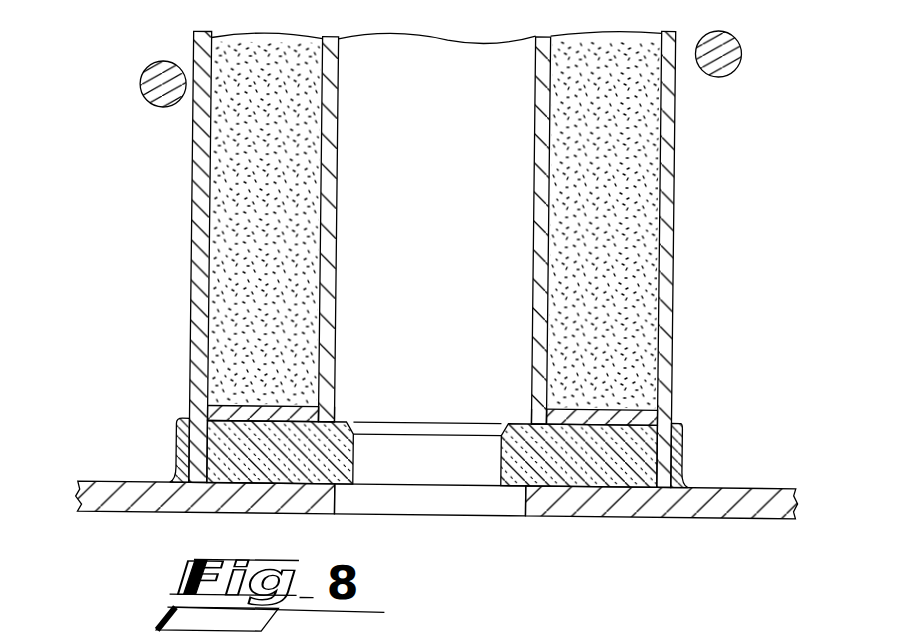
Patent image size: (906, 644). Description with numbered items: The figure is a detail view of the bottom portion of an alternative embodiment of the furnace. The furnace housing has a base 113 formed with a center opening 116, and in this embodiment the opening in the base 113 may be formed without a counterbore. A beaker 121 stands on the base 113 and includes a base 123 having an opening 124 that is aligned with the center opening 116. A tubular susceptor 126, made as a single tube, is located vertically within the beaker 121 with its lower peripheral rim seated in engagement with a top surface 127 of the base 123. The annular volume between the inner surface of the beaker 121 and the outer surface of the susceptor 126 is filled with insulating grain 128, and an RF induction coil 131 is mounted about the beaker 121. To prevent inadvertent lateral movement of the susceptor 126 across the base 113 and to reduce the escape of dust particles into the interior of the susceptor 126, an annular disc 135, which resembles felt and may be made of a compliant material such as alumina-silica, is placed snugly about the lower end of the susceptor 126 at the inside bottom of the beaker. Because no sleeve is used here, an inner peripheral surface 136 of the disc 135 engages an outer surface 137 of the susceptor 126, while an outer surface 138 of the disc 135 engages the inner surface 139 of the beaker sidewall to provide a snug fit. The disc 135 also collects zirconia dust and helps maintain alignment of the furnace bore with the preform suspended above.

The base 113 is at (435, 527).
The center opening 116 is at (434, 527).
The beaker 121 is at (698, 259).
The base of the beaker 123 is at (482, 449).
The opening 124 is at (427, 505).
The tubular susceptor 126 is at (434, 229).
The top surface 127 is at (508, 393).
The insulating grain 128 is at (644, 225).
The RF induction coil 131 is at (444, 76).
The annular disc 135 is at (210, 405).
The inner peripheral surface 136 is at (361, 392).
The outer surface 137 is at (305, 224).
The outer surface 138 is at (644, 400).
The inner surface 139 is at (176, 257).